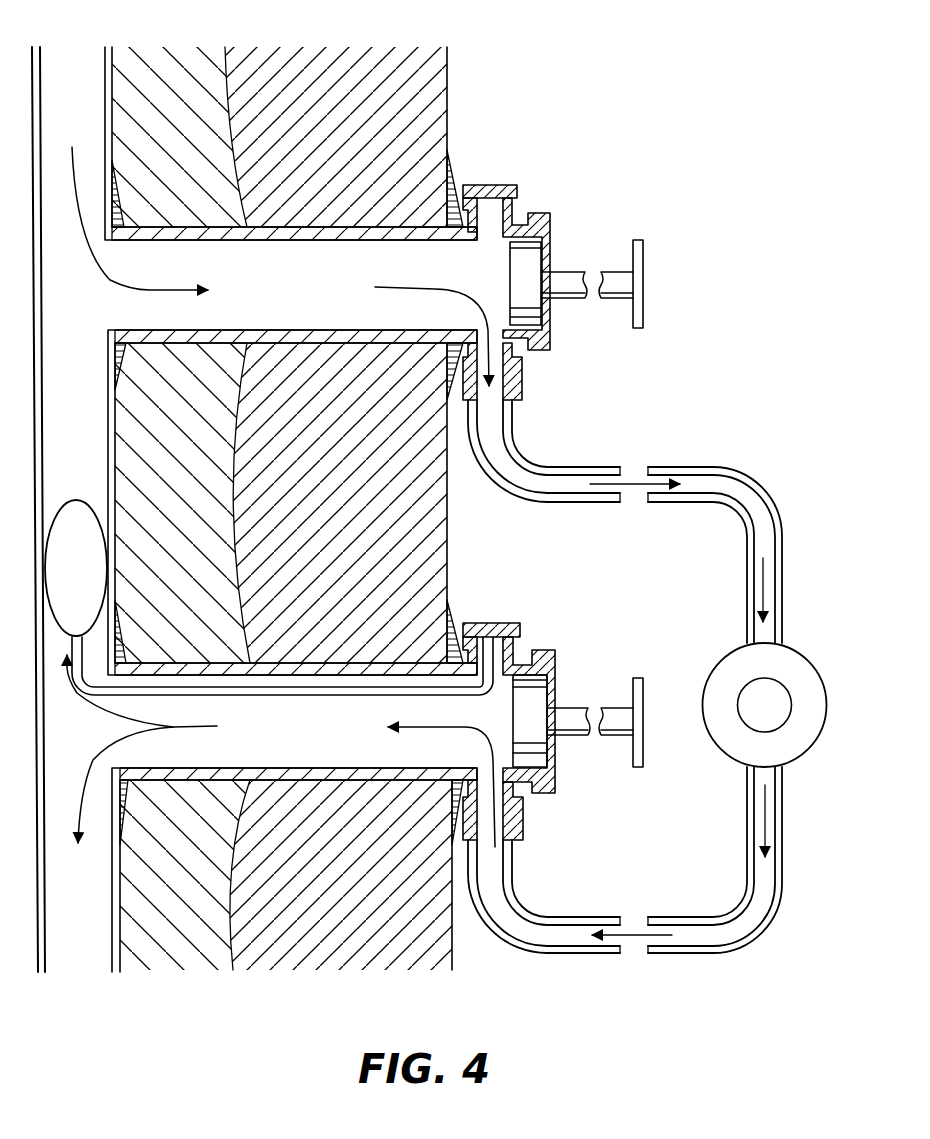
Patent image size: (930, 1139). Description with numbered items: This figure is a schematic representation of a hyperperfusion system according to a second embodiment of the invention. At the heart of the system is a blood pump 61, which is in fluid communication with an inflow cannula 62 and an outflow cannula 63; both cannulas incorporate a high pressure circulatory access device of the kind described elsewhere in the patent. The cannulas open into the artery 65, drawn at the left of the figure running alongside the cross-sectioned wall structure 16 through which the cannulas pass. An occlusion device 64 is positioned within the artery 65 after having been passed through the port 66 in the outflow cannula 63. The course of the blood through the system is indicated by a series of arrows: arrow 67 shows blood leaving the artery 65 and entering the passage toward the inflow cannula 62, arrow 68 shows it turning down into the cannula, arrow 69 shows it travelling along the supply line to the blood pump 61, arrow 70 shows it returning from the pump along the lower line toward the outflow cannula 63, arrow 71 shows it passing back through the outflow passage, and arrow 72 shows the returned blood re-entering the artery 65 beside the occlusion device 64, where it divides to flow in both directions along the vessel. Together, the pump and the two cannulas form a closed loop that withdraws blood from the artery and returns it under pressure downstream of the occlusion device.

The fuel tank wall blocks 16 is at (455, 948).
The blood pump 61 is at (792, 750).
The inflow cannula 62 is at (580, 227).
The outflow cannula 63 is at (592, 798).
The occlusion device 64 is at (73, 525).
The artery 65 is at (57, 78).
The port 66 is at (510, 652).
The arrow 67 is at (102, 284).
The arrow 68 is at (465, 293).
The arrow 69 is at (768, 592).
The arrow 70 is at (635, 938).
The arrow 71 is at (440, 728).
The arrow 72 is at (182, 728).